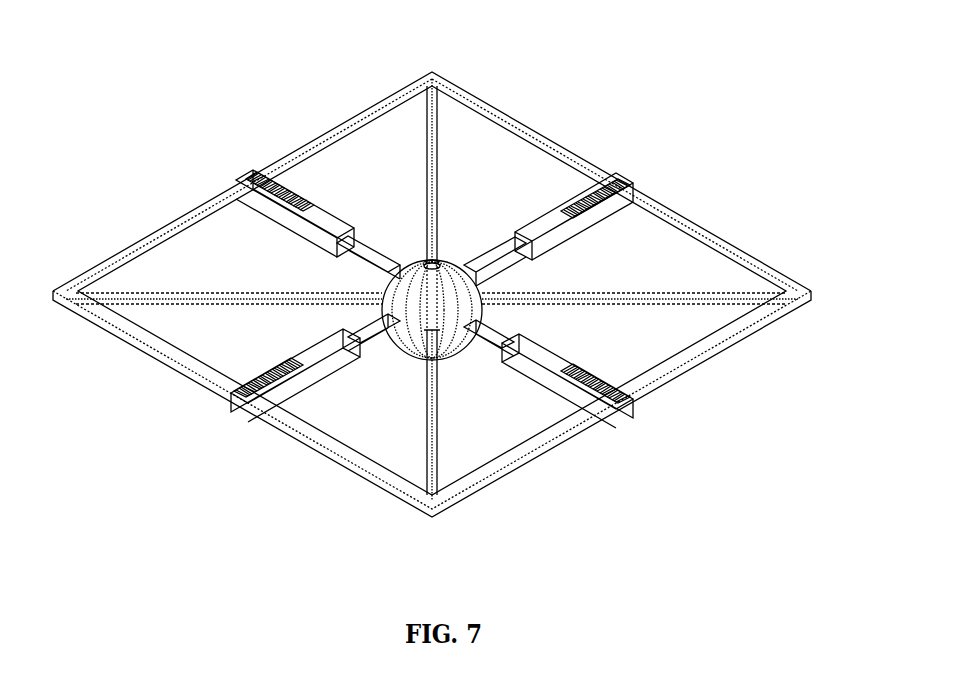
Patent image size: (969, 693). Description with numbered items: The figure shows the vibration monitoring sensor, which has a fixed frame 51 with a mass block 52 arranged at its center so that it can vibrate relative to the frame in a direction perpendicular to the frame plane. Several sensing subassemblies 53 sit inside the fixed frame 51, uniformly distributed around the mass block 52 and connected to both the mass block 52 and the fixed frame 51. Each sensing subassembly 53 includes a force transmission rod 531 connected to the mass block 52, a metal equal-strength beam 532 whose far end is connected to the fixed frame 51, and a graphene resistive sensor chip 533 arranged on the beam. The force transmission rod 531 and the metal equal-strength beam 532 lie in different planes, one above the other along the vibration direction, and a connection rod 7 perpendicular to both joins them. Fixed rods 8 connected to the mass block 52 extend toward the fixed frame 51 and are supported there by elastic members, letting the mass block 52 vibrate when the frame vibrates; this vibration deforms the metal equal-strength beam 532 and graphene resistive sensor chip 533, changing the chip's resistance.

The connection rod 7 is at (350, 239).
The fixed rod 8 is at (427, 160).
The fixed frame 51 is at (165, 240).
The mass block 52 is at (453, 363).
The sensing subassembly 53 is at (653, 160).
The force transmission rod 531 is at (513, 270).
The metal equal-strength beam 532 is at (552, 226).
The graphene resistive sensor chip 533 is at (587, 195).